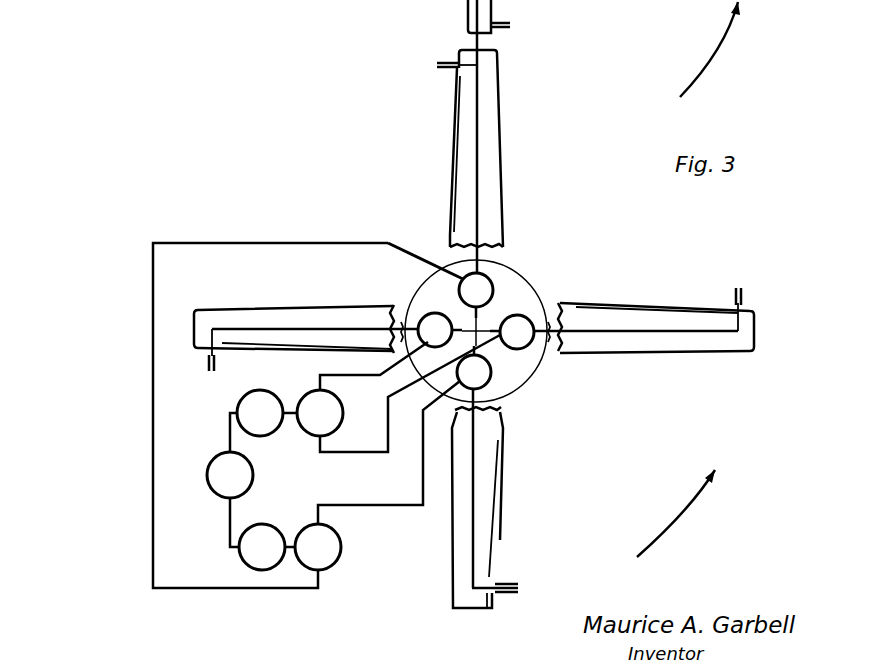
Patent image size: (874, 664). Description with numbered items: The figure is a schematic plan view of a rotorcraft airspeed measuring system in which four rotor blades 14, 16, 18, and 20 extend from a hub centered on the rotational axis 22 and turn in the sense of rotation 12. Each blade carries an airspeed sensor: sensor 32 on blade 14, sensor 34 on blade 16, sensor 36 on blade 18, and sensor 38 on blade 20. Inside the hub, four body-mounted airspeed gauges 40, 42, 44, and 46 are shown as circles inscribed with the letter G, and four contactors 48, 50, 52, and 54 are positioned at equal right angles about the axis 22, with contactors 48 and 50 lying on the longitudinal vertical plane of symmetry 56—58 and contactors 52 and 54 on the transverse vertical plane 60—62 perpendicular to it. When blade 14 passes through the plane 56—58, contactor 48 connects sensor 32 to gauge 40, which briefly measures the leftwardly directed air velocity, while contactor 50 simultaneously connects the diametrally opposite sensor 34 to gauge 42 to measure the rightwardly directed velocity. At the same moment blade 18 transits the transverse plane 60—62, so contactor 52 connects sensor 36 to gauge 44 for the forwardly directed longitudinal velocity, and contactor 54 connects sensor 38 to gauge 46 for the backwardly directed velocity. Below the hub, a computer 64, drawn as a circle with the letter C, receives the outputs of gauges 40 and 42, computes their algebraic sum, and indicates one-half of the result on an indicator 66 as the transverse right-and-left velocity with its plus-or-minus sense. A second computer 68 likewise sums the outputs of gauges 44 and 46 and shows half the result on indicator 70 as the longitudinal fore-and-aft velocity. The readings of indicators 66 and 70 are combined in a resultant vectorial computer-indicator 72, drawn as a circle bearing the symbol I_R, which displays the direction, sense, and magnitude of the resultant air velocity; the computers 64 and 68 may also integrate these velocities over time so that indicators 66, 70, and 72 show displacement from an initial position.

The sense of rotation 12 is at (701, 279).
The rotor blade 14 is at (664, 305).
The rotor blade 16 is at (265, 306).
The rotor blade 18 is at (500, 525).
The rotor blade 20 is at (501, 134).
The rotational axis 22 is at (500, 325).
The airspeed sensor 32 is at (737, 299).
The airspeed sensor 34 is at (206, 362).
The airspeed sensor 36 is at (505, 25).
The airspeed sensor 38 is at (437, 66).
The airspeed gauge 40 is at (525, 313).
The airspeed gauge 42 is at (423, 310).
The airspeed gauge 44 is at (490, 372).
The airspeed gauge 46 is at (500, 242).
The contactor 48 is at (548, 330).
The contactor 50 is at (400, 308).
The contactor 52 is at (480, 410).
The contactor 54 is at (469, 253).
The vertical plane 56 is at (757, 331).
The vertical plane 58 is at (178, 328).
The transverse vertical plane 60 is at (475, 588).
The transverse vertical plane 62 is at (486, 40).
The computer 64 is at (342, 423).
The indicator 66 is at (232, 412).
The computer 68 is at (342, 550).
The indicator 70 is at (230, 556).
The resultant vectorial computer-indicator 72 is at (254, 475).